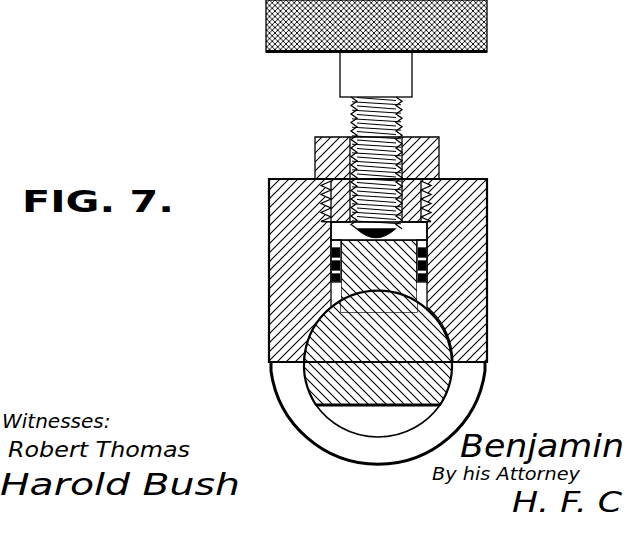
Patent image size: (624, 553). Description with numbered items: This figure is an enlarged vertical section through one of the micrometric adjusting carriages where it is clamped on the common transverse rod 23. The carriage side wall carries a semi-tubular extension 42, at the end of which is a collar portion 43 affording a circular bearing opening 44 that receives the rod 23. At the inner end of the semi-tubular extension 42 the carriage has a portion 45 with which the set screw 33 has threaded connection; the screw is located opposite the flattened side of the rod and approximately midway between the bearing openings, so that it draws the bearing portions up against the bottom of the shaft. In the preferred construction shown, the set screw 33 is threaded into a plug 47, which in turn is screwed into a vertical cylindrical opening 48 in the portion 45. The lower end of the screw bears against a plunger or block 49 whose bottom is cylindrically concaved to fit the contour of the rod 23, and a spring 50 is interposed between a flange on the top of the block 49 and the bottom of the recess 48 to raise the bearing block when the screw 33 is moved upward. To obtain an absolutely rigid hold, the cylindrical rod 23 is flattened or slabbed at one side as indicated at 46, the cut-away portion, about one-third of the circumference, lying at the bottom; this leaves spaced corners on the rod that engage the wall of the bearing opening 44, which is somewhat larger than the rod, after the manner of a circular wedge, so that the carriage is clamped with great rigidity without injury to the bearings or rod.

The set screw 33 is at (488, 28).
The plug 47 is at (437, 156).
The carriage portion 45 is at (280, 232).
The semi-tubular extension 42 is at (468, 302).
The vertical cylindrical opening 48 is at (412, 232).
The bearing block 49 is at (340, 285).
The spring 50 is at (418, 265).
The transverse rod 23 is at (418, 338).
The flattened portion of rod 46 is at (382, 407).
The collar portion 43 is at (283, 393).
The bearing opening 44 is at (325, 422).